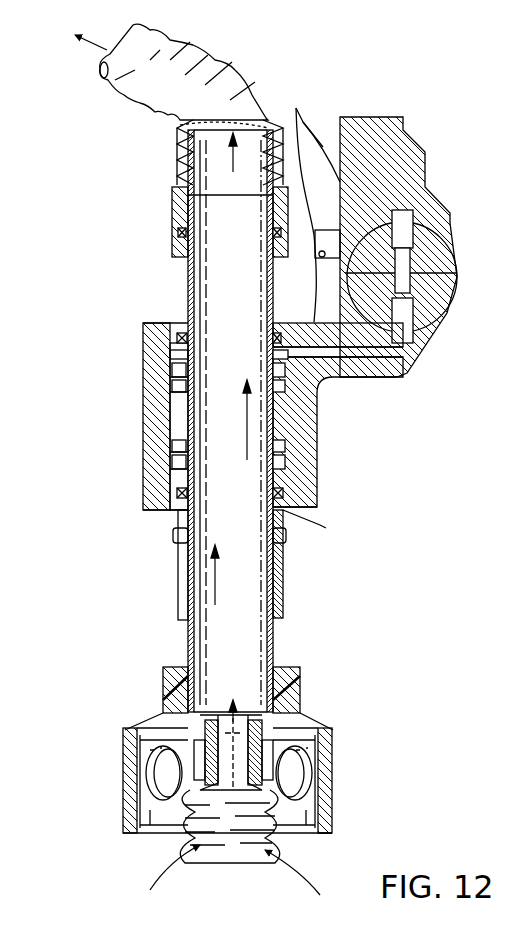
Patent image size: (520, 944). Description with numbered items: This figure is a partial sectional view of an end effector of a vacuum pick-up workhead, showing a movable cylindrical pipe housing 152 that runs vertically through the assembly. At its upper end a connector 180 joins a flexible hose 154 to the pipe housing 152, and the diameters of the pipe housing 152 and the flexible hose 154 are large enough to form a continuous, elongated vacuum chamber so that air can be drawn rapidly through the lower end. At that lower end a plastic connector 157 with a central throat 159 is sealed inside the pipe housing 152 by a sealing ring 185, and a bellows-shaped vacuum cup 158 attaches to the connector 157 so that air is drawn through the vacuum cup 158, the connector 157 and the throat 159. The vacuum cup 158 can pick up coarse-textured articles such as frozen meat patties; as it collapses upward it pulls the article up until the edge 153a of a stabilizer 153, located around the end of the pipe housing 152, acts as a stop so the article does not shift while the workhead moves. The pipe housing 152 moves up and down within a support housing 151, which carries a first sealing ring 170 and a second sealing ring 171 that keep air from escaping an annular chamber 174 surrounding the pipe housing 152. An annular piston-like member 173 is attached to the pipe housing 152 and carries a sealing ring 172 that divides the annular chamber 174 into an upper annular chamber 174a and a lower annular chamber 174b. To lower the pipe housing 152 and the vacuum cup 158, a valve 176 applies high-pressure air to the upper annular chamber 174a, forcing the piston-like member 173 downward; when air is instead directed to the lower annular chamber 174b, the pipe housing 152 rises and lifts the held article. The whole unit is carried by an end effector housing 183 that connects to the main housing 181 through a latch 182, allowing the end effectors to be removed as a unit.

The support housing 151 is at (178, 462).
The pipe housing 152 is at (285, 632).
The stabilizer 153 is at (335, 728).
The edge 153a is at (333, 840).
The flexible hose 154 is at (218, 80).
The connector 157 is at (258, 800).
The vacuum cup 158 is at (297, 855).
The throat 159 is at (240, 770).
The first sealing ring 170 is at (294, 506).
The second sealing ring 171 is at (176, 338).
The sealing ring 172 is at (150, 447).
The piston-like member 173 is at (290, 398).
The annular chamber 174 is at (282, 422).
The upper annular chamber 174a is at (167, 353).
The lower annular chamber 174b is at (162, 500).
The valve 176 is at (405, 272).
The connector 180 is at (176, 210).
The main housing 181 is at (410, 157).
The latch 182 is at (436, 362).
The end effector housing 183 is at (148, 320).
The sealing ring 185 is at (190, 727).